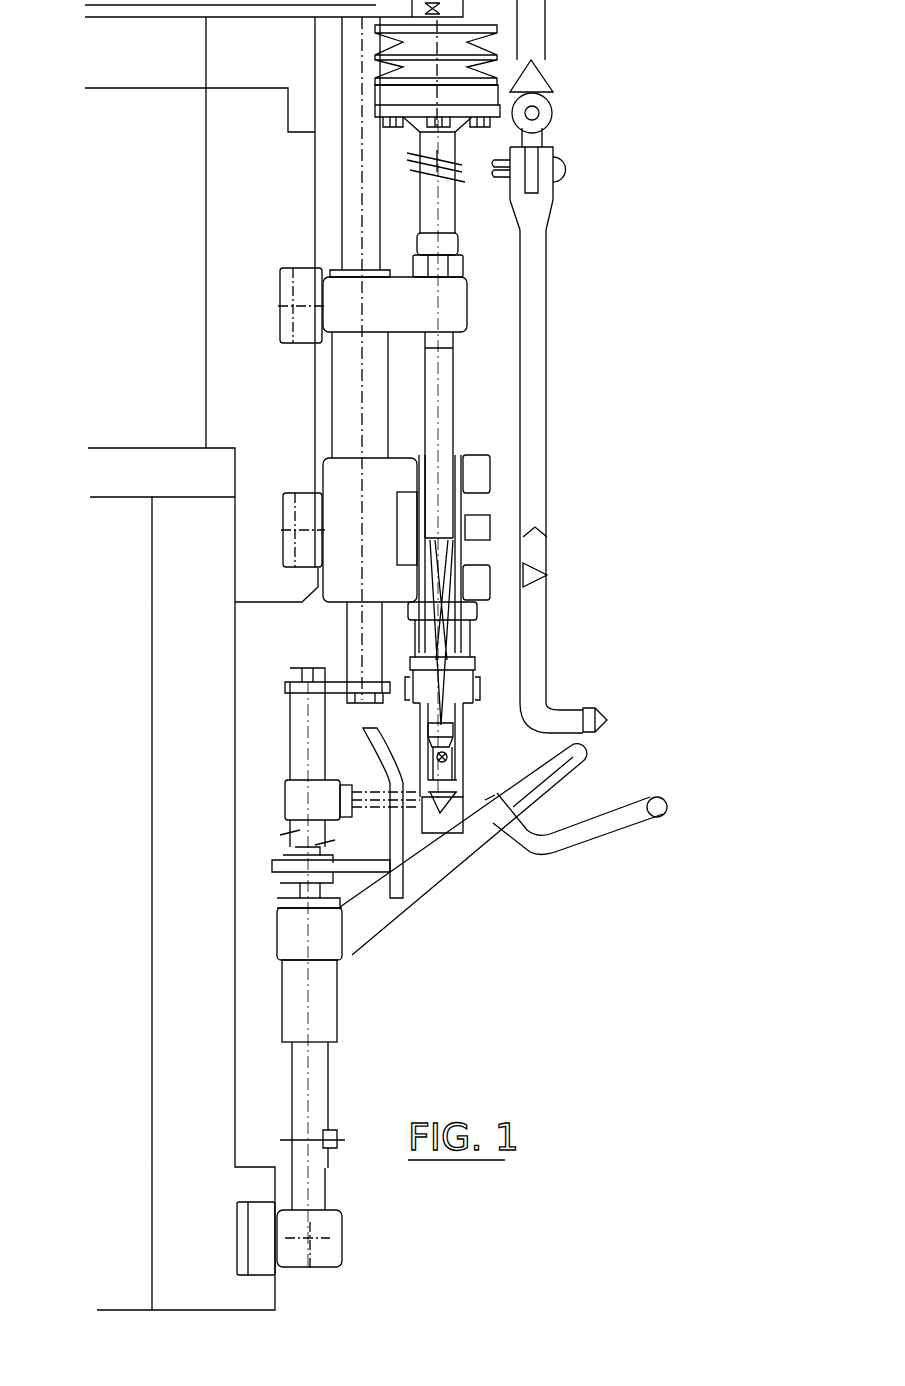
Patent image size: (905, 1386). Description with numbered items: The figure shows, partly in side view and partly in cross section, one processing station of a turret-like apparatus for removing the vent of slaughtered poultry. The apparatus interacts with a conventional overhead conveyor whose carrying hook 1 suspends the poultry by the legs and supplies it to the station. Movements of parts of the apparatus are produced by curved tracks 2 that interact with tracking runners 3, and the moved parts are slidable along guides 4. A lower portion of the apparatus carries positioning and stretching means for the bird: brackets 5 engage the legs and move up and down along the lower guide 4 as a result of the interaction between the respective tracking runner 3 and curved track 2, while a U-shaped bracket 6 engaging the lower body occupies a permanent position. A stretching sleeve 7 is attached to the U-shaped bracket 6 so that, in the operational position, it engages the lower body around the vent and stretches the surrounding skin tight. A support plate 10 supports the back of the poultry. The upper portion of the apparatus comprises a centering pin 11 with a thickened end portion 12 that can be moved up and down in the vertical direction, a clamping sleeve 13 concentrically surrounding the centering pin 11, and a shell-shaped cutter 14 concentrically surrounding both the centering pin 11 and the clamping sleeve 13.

The carrying hook 1 is at (540, 300).
The curved track 2 is at (280, 327).
The tracking runner 3 is at (300, 288).
The guide 4 is at (350, 187).
The bracket 5 is at (567, 770).
The U-shaped bracket 6 is at (625, 822).
The stretching sleeve 7 is at (455, 772).
The support plate 10 is at (398, 812).
The centering pin 11 is at (495, 800).
The thickened end portion 12 is at (455, 830).
The clamping sleeve 13 is at (545, 705).
The shell-shaped cutter 14 is at (420, 840).